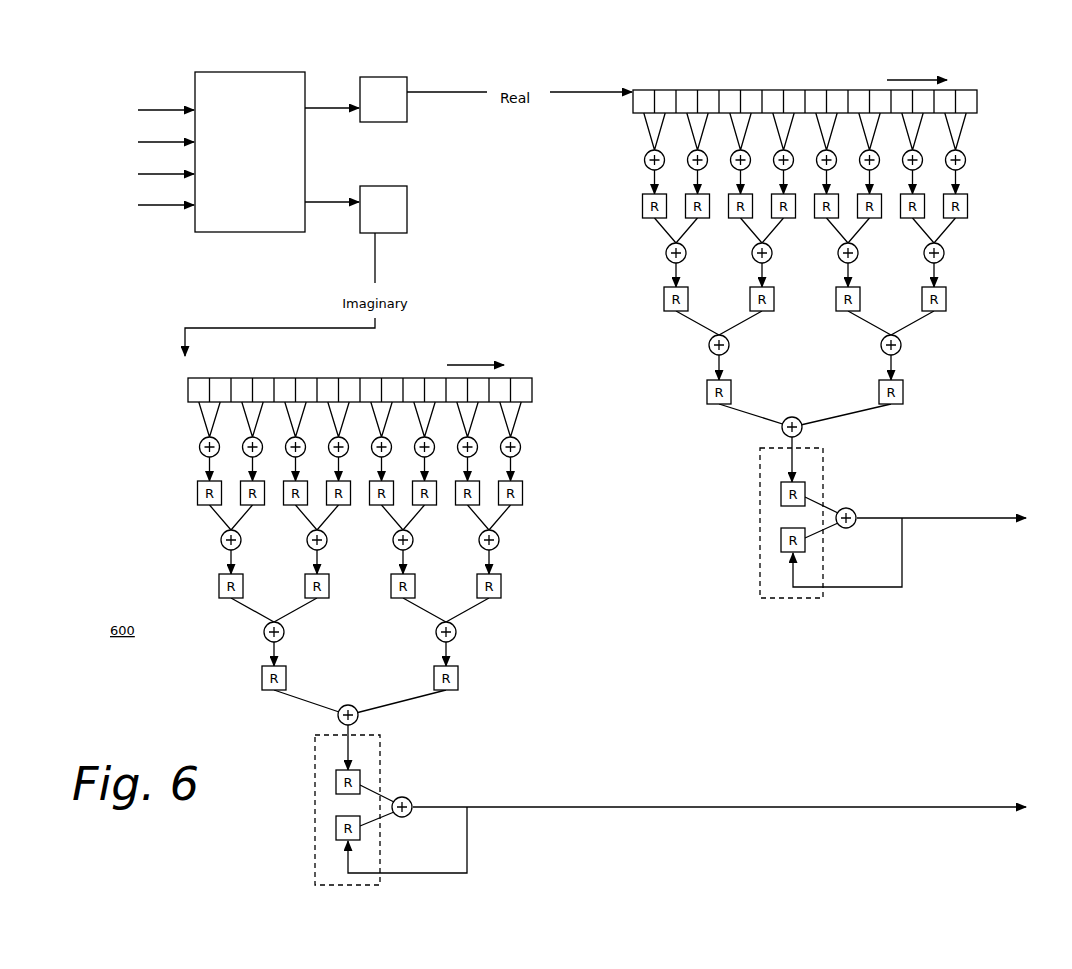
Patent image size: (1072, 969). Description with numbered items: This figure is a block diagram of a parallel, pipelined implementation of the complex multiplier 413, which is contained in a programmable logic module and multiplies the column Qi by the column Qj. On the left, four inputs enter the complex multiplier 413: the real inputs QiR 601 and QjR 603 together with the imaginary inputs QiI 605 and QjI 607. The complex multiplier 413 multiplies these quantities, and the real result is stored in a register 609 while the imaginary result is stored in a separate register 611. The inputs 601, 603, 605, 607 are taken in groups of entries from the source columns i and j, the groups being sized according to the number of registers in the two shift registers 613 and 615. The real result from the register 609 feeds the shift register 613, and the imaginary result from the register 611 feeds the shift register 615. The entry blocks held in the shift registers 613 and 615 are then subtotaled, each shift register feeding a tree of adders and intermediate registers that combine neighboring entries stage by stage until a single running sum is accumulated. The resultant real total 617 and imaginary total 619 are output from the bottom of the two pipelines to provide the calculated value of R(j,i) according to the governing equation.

The complex multiplier 413 is at (245, 232).
The real input QiR 601 is at (131, 110).
The real input QjR 603 is at (131, 142).
The imaginary input QiI 605 is at (131, 174).
The imaginary input QjI 607 is at (131, 205).
The register 609 is at (383, 77).
The register 611 is at (393, 233).
The shift register 613 is at (703, 90).
The shift register 615 is at (273, 378).
The real total 617 is at (907, 518).
The imaginary total 619 is at (645, 806).